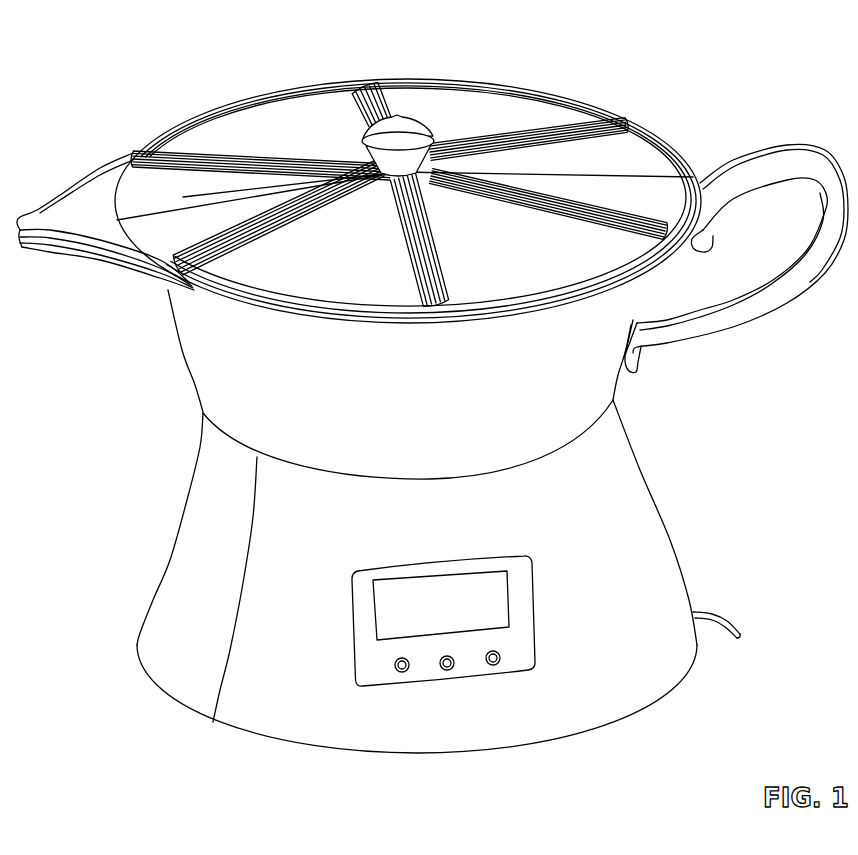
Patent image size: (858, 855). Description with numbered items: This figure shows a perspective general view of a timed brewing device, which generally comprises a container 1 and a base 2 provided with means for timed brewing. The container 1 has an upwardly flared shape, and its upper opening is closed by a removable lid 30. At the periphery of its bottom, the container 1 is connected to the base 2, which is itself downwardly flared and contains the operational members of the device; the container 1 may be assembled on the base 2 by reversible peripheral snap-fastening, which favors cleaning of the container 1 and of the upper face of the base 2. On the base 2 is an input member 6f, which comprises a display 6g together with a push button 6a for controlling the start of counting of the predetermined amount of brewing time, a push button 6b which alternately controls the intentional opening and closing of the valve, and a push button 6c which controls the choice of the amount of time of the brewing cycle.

The container 1 is at (240, 365).
The base 2 is at (183, 613).
The removable lid 30 is at (497, 112).
The input member 6f is at (552, 619).
The display 6g is at (480, 593).
The push button 6a is at (453, 672).
The push button 6b is at (495, 672).
The push button 6c is at (403, 675).